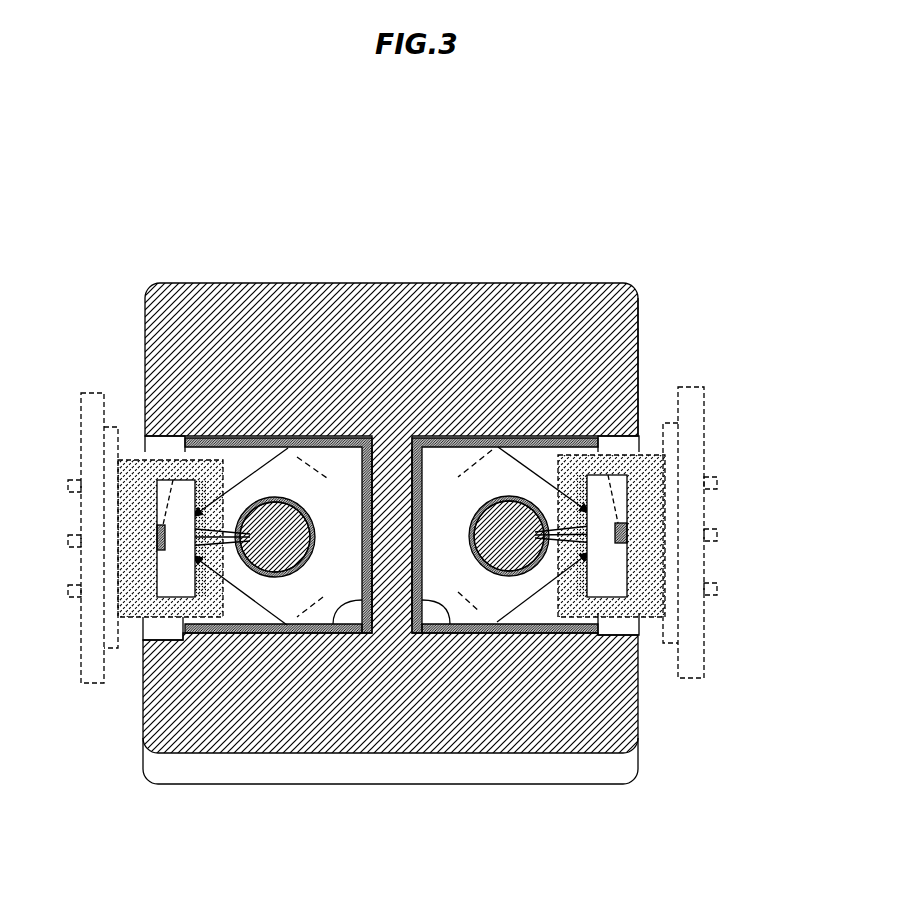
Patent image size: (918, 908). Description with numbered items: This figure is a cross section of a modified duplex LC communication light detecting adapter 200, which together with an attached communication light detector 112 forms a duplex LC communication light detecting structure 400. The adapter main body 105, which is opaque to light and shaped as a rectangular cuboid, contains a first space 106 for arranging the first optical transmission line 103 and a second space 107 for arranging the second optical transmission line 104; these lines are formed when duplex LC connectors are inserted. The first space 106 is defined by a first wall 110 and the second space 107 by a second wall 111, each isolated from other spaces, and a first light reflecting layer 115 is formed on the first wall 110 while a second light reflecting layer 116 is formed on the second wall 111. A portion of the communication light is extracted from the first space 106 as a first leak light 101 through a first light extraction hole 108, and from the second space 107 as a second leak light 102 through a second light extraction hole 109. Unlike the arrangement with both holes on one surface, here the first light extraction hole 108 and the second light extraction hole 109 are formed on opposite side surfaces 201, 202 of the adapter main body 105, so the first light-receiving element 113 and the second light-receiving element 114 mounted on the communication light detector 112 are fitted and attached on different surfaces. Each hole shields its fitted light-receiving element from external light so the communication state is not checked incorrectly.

The first leak light 101 is at (240, 480).
The second leak light 102 is at (543, 490).
The first optical transmission line 103 is at (264, 573).
The second optical transmission line 104 is at (503, 575).
The adapter main body 105 is at (641, 324).
The first space 106 is at (333, 453).
The second space 107 is at (455, 453).
The first light extraction hole 108 is at (165, 640).
The second light extraction hole 109 is at (618, 635).
The first wall 110 is at (333, 624).
The second wall 111 is at (450, 624).
The communication light detector 112 is at (711, 392).
The first light-receiving element 113 is at (173, 452).
The second light-receiving element 114 is at (608, 452).
The first light reflecting layer 115 is at (192, 633).
The second light reflecting layer 116 is at (567, 638).
The duplex LC communication light detecting adapter 200 is at (141, 335).
The side surface 201 is at (141, 727).
The side surface 202 is at (640, 722).
The duplex LC communication light detecting structure 400 is at (153, 207).